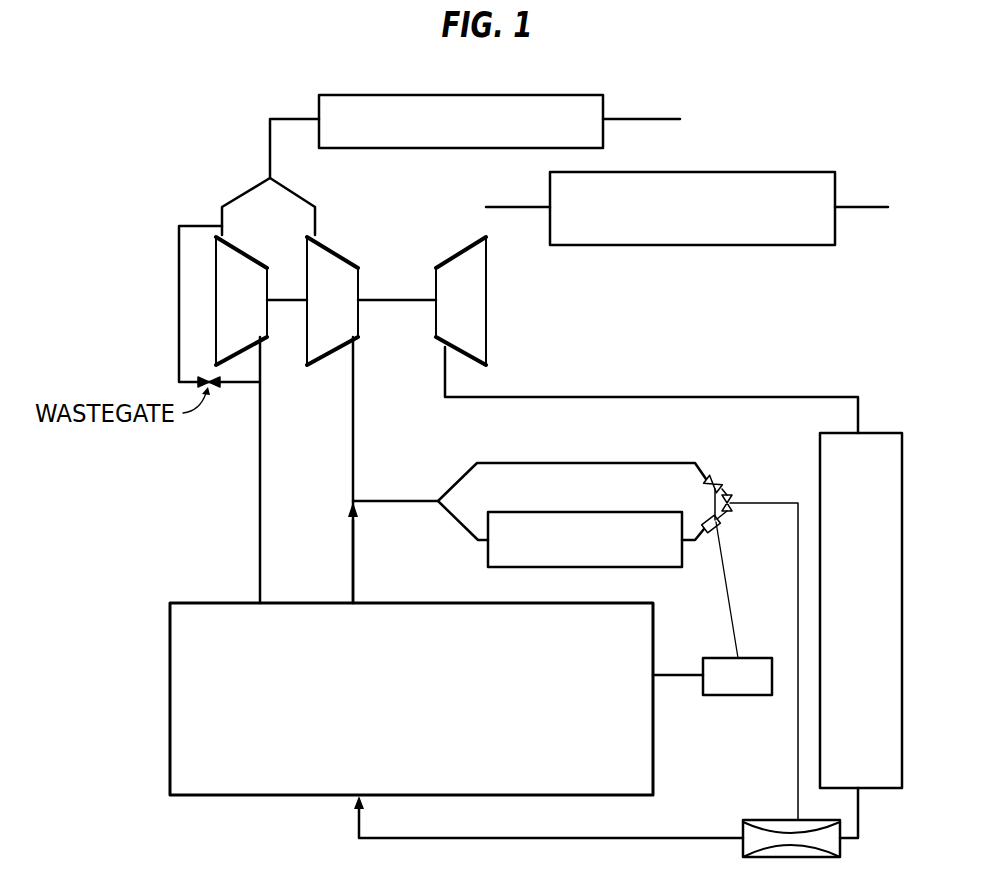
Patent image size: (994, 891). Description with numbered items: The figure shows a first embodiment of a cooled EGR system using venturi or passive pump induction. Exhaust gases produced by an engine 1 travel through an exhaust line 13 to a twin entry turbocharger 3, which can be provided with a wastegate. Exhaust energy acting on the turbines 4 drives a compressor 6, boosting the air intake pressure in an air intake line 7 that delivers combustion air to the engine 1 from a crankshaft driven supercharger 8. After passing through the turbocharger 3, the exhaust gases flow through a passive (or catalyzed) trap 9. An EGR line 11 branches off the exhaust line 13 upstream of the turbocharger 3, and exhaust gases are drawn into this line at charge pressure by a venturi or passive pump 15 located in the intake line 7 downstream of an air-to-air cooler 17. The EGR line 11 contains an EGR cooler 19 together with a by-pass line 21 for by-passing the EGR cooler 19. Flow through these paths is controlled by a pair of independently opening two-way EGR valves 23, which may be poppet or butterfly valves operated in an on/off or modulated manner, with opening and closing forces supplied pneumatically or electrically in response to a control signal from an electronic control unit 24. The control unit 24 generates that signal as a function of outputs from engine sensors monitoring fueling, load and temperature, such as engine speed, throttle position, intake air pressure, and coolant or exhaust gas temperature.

The engine 1 is at (435, 603).
The twin entry turbocharger 3 is at (287, 371).
The turbines 4 is at (305, 268).
The compressor 6 is at (487, 302).
The air intake line 7 is at (590, 397).
The crankshaft driven supercharger 8 is at (790, 172).
The passive trap 9 is at (558, 95).
The EGR line 11 is at (402, 501).
The exhaust line 13 is at (353, 559).
The venturi or passive pump 15 is at (789, 818).
The air-to-air cooler 17 is at (875, 433).
The EGR cooler 19 is at (605, 512).
The by-pass line 21 is at (474, 462).
The two-way EGR valves 23 is at (717, 474).
The electronic control unit 24 is at (721, 657).